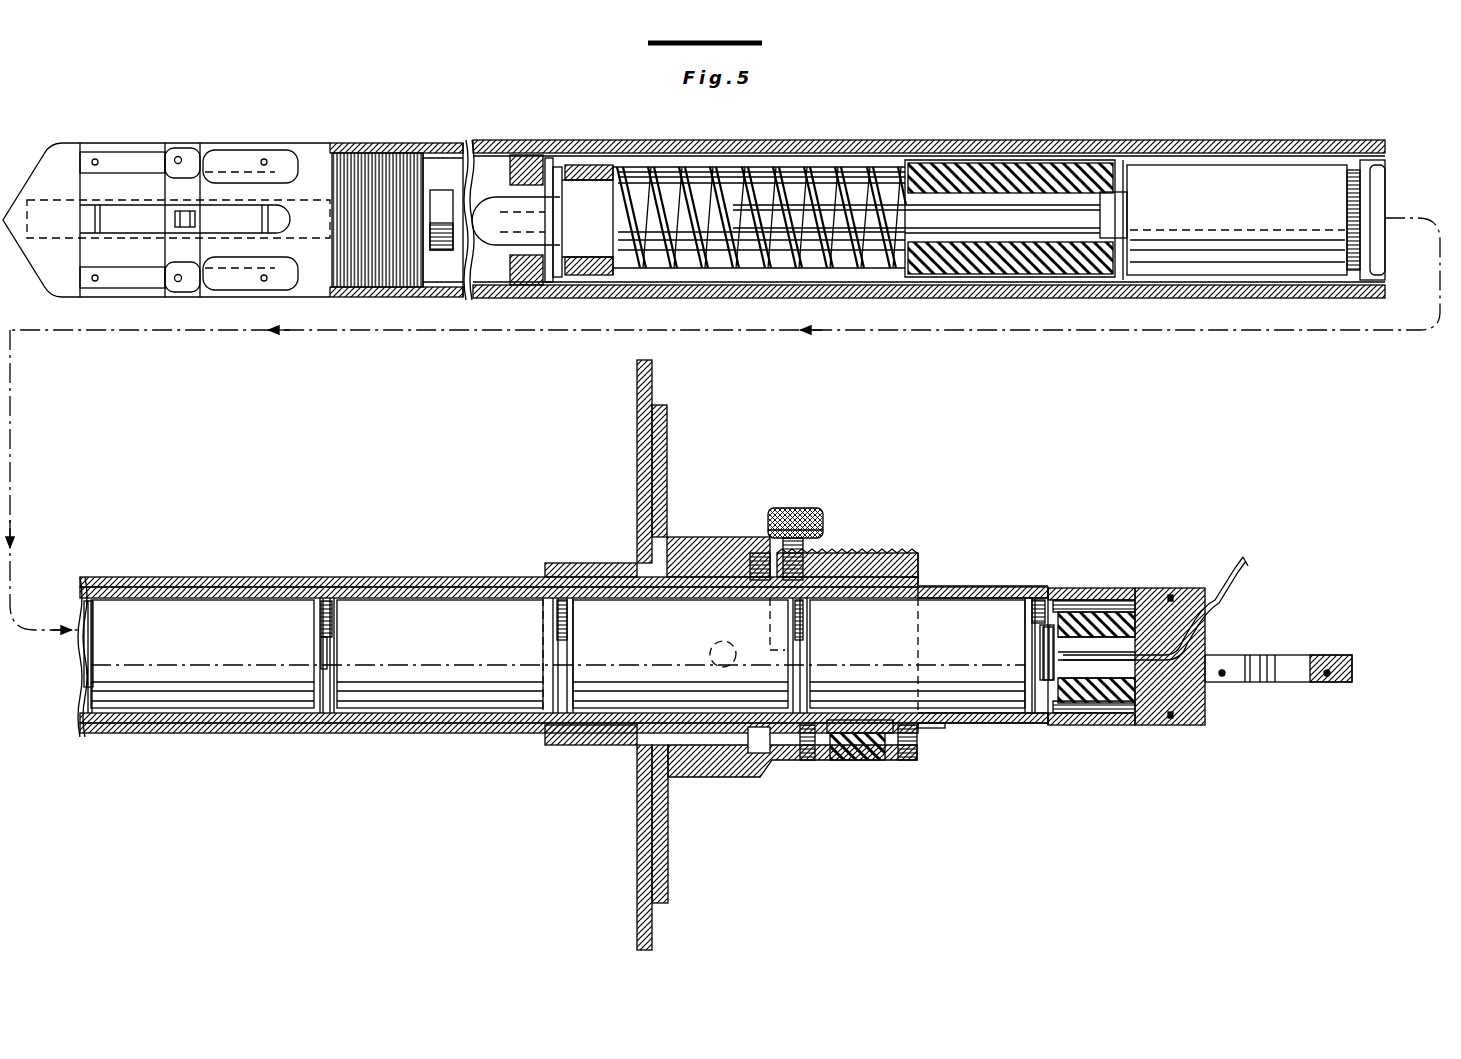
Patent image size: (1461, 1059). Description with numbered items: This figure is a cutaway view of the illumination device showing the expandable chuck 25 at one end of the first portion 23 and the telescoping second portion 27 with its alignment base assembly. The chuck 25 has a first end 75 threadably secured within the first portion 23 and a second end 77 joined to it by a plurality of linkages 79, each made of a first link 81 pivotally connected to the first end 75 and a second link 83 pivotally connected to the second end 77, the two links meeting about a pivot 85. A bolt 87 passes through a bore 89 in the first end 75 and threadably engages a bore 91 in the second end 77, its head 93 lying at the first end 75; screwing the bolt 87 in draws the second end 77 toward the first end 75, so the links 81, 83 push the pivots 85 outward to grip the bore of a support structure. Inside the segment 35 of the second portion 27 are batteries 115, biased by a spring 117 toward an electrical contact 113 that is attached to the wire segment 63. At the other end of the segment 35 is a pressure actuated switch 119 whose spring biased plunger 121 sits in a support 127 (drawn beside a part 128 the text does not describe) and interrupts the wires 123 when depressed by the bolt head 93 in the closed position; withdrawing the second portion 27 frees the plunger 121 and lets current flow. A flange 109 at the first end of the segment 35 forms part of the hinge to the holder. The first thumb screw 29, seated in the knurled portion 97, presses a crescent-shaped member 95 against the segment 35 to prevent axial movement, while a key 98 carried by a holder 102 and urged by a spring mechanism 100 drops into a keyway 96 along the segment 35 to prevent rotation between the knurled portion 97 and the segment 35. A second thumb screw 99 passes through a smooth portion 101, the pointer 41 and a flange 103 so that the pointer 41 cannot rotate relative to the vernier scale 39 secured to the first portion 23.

The first portion 23 is at (512, 140).
The expandable chuck 25 is at (303, 141).
The second portion 27 is at (940, 147).
The first thumb screw 29 is at (800, 508).
The segment 35 is at (990, 588).
The vernier scale 39 is at (636, 395).
The pointer 41 is at (667, 428).
The wire segment 63 is at (1227, 572).
The first end 75 is at (341, 150).
The second end 77 is at (62, 147).
The linkages 79 is at (184, 136).
The first link 81 is at (237, 146).
The second link 83 is at (130, 150).
The pivot 85 is at (182, 155).
The bolt 87 is at (444, 198).
The bore 89 is at (365, 218).
The bore 91 is at (48, 240).
The head 93 is at (506, 196).
The crescent-shaped member 95 is at (837, 553).
The keyway 96 is at (932, 728).
The knurled portion 97 is at (920, 562).
The key 98 is at (852, 722).
The second thumb screw 99 is at (728, 640).
The spring mechanism 100 is at (882, 762).
The smooth portion 101 is at (672, 537).
The holder 102 is at (902, 756).
The flange 103 is at (636, 558).
The flange 109 is at (1237, 653).
The electrical contact 113 is at (1074, 590).
The batteries 115 is at (1232, 176).
The spring 117 is at (825, 186).
The pressure actuated switch 119 is at (585, 245).
The spring biased plunger 121 is at (512, 255).
The wires 123 is at (882, 192).
The support 127 is at (534, 272).
The plate 128 is at (522, 262).